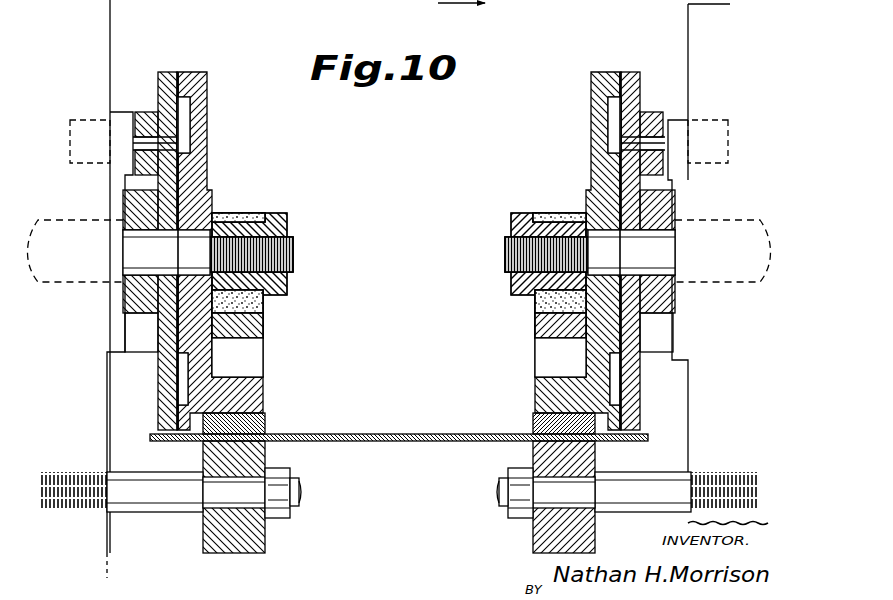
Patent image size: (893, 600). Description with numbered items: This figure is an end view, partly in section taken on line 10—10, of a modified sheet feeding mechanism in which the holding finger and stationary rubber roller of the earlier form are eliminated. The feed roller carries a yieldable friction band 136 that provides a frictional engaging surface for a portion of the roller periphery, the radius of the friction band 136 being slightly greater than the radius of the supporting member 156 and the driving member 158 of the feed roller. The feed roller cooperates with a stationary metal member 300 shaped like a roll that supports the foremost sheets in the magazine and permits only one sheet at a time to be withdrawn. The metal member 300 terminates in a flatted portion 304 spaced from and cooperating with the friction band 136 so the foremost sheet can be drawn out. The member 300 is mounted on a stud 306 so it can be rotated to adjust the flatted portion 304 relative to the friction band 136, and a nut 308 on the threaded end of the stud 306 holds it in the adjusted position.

The section line 10 is at (462, 16).
The yieldable friction band 136 is at (267, 422).
The supporting member 156 is at (193, 72).
The driving member 158 is at (163, 72).
The cooperating metal member 300 is at (250, 553).
The flatted portion 304 is at (215, 444).
The stud 306 is at (300, 490).
The nut 308 is at (278, 518).